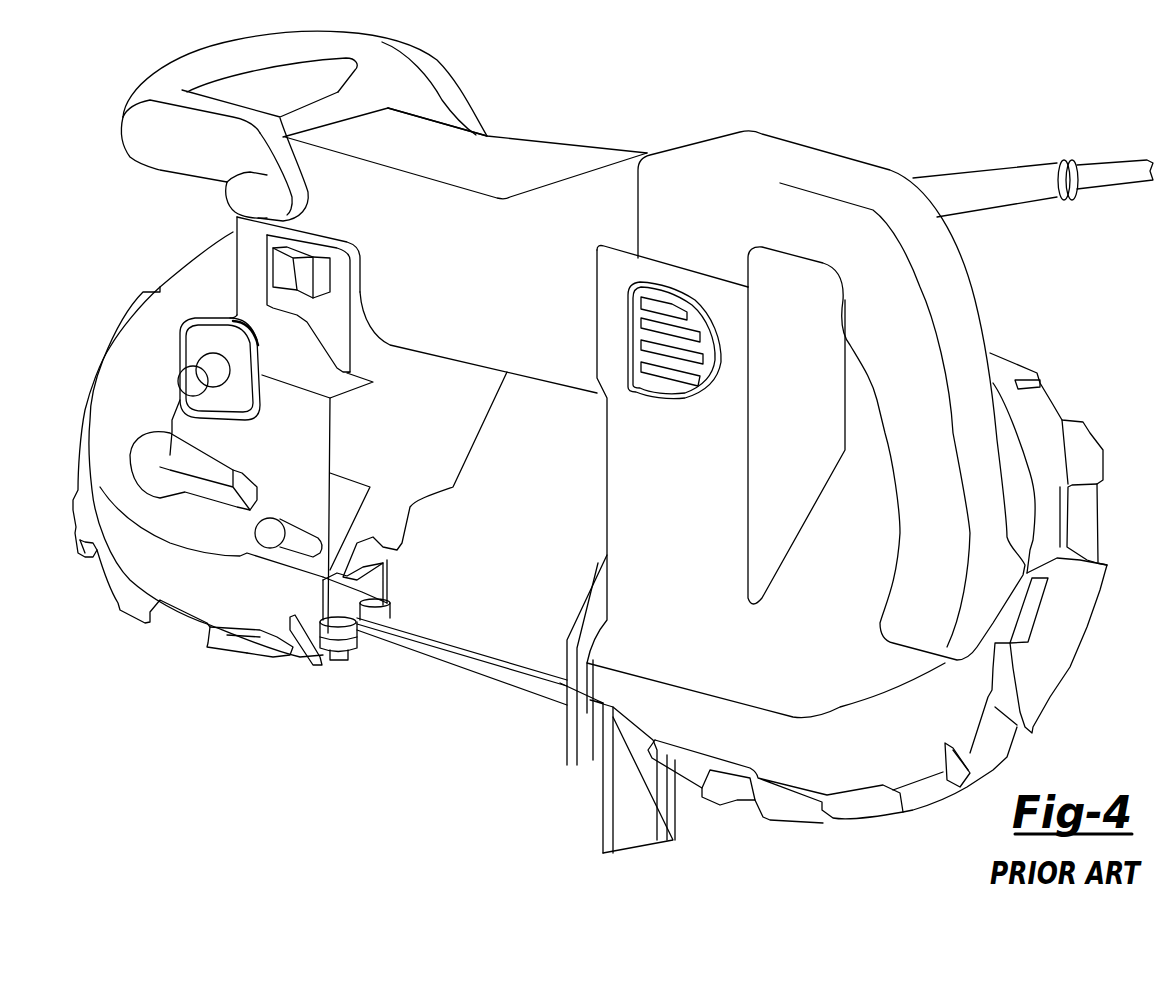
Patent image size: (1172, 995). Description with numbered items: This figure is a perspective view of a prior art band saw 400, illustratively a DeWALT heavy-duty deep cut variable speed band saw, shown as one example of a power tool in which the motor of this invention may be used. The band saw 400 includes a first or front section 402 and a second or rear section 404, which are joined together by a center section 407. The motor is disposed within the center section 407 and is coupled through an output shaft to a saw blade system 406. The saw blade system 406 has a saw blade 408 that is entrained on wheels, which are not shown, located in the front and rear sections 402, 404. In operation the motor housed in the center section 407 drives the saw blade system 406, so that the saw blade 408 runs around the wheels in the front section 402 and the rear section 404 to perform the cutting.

The band saw 400 is at (742, 85).
The first or front section 402 is at (157, 567).
The second or rear section 404 is at (850, 753).
The saw blade system 406 is at (364, 712).
The center section 407 is at (520, 160).
The saw blade 408 is at (482, 675).